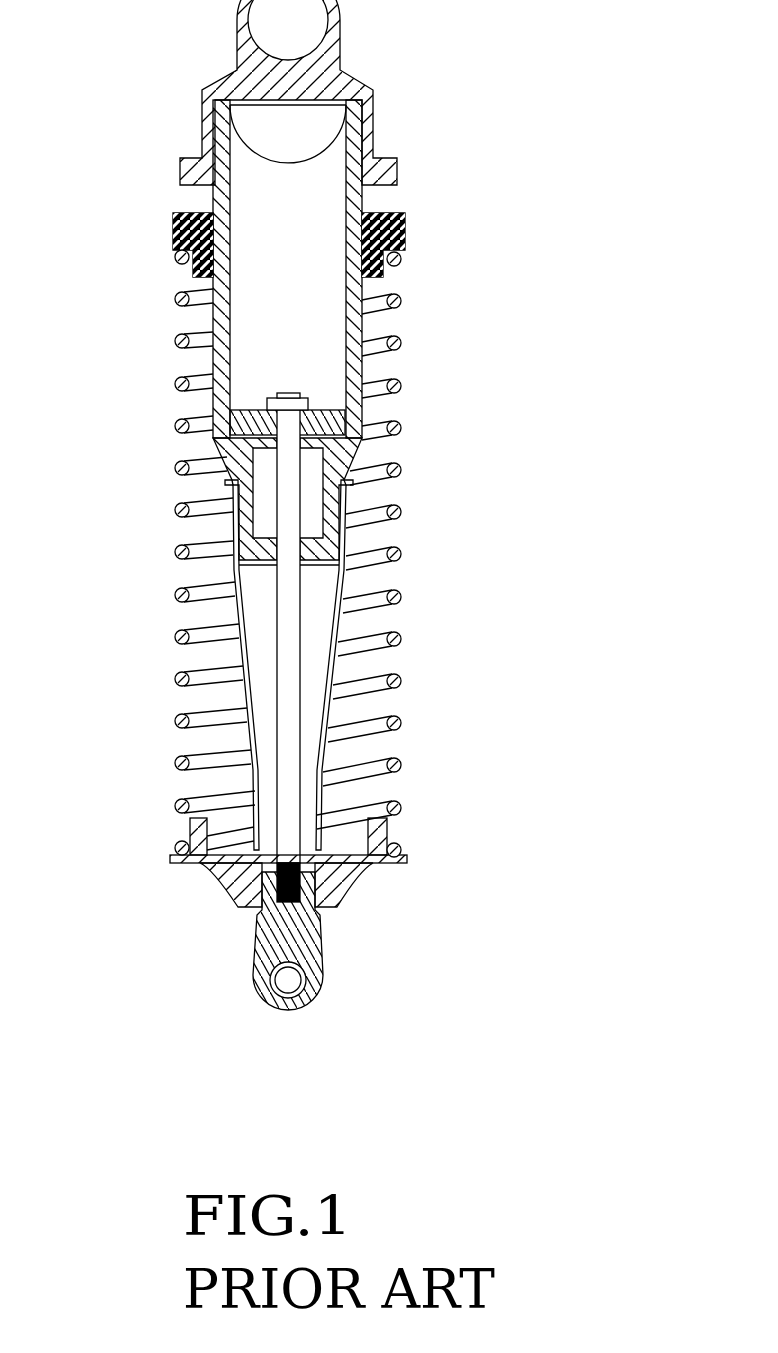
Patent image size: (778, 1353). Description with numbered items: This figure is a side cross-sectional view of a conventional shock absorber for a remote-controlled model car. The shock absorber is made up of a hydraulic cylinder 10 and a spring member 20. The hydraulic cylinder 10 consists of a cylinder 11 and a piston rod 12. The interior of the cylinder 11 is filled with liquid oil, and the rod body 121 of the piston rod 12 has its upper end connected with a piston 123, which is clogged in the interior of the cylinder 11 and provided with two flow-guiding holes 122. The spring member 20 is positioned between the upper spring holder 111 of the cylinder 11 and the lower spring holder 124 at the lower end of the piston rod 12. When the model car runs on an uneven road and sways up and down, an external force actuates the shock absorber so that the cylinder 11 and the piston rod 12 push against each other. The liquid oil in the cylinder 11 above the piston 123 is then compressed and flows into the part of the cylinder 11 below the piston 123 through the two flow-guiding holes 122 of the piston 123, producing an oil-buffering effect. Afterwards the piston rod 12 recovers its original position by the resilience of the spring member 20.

The hydraulic cylinder 10 is at (403, 175).
The cylinder 11 is at (365, 318).
The upper spring holder 111 is at (170, 232).
The piston rod 12 is at (302, 640).
The rod body 121 is at (287, 725).
The flow-guiding holes 122 is at (337, 423).
The piston 123 is at (310, 412).
The lower spring holder 124 is at (216, 871).
The spring member 20 is at (408, 510).